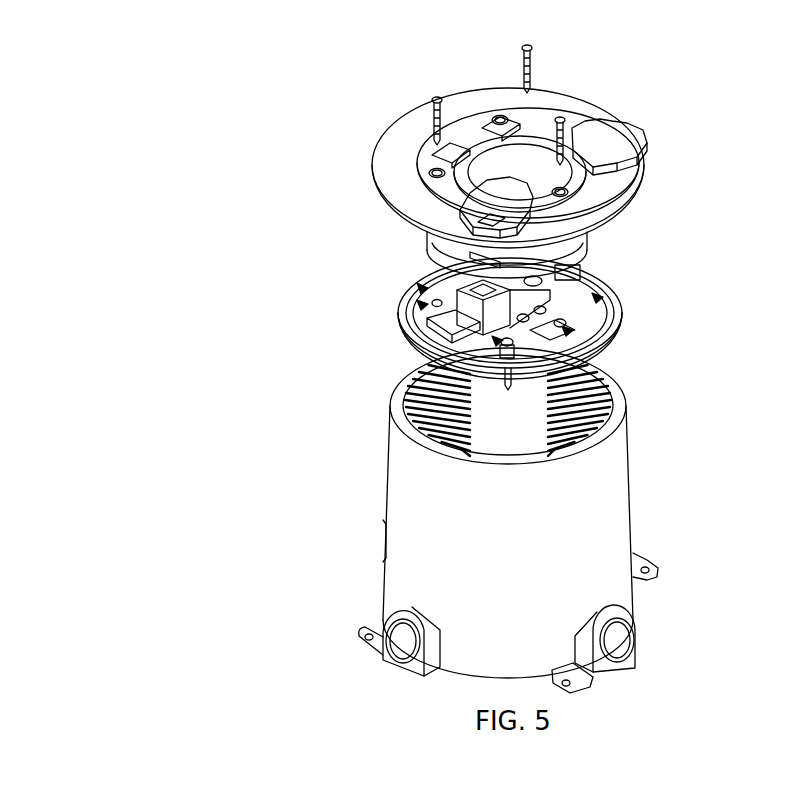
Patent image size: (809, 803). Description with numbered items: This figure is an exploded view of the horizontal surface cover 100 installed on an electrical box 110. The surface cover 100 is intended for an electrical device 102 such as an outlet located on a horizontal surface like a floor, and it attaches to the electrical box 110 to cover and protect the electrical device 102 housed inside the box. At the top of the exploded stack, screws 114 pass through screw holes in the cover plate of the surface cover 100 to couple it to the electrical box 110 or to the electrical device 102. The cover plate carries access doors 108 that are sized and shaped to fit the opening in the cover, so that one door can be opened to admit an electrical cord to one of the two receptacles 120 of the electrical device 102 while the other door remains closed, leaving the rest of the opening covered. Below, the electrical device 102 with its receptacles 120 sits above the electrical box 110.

The horizontal surface cover 100 is at (403, 174).
The electrical device 102 is at (480, 293).
The access door 108 is at (528, 204).
The electrical box 110 is at (522, 533).
The screw 114 is at (565, 118).
The receptacle 120 is at (597, 297).